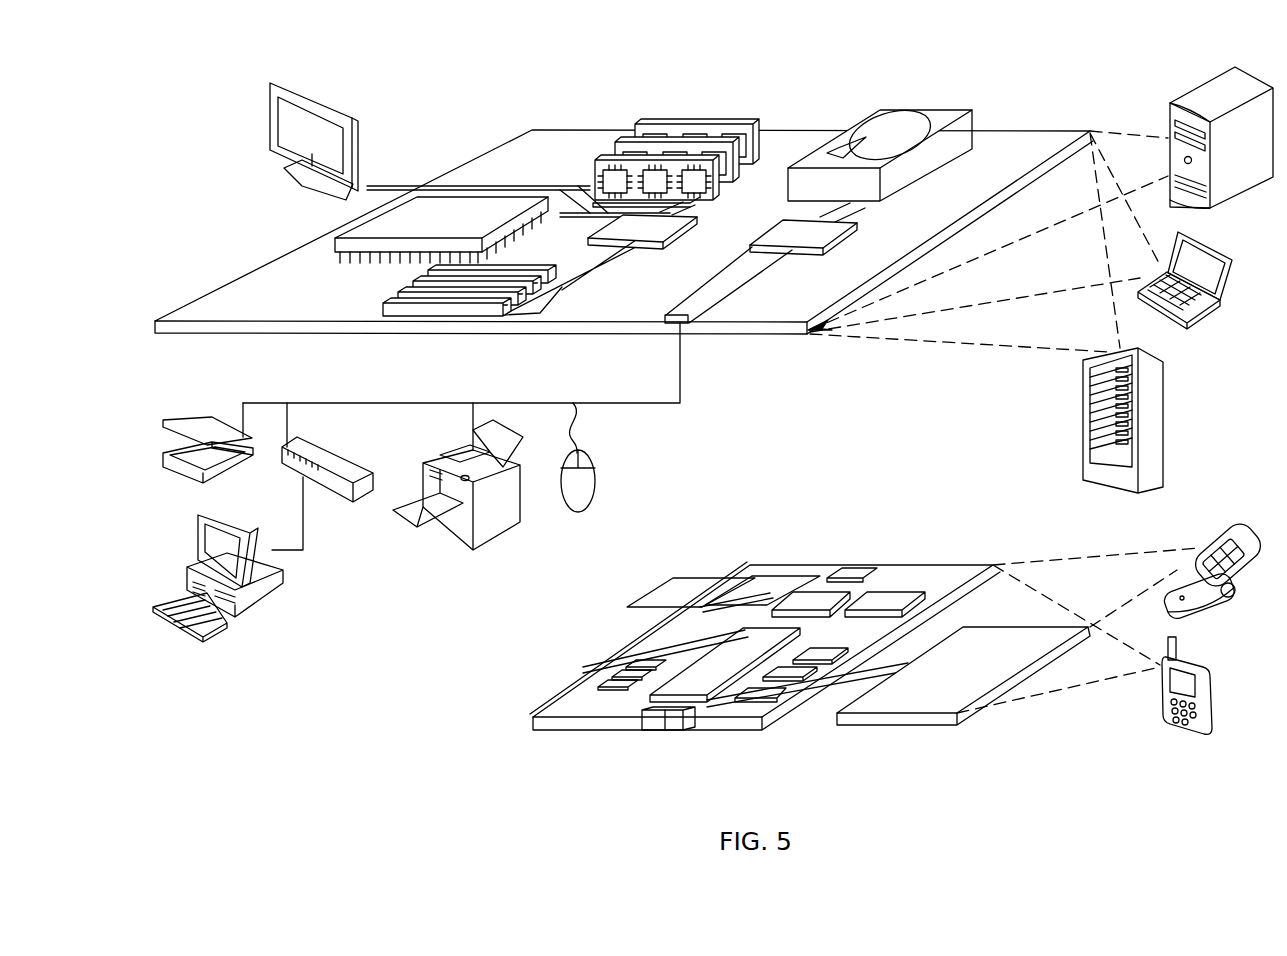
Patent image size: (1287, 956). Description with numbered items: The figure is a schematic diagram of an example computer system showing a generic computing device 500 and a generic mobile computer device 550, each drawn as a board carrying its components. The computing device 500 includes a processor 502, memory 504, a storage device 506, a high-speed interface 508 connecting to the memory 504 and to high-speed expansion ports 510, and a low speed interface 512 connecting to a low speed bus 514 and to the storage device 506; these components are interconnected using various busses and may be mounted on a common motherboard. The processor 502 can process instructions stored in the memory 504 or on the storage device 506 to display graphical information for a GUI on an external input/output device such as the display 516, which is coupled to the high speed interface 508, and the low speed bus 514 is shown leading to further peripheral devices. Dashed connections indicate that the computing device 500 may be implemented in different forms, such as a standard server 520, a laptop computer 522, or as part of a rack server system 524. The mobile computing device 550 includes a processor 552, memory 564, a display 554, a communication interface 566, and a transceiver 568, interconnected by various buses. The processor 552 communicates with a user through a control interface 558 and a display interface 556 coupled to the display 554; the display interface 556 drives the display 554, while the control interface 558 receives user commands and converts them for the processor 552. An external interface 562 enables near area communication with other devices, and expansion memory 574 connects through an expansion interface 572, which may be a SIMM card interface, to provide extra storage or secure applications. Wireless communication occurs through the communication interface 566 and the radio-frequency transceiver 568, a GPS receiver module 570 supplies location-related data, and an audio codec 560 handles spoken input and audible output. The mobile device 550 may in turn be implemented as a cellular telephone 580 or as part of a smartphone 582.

The computing device 500 is at (460, 99).
The processor 502 is at (335, 242).
The memory 504 is at (655, 124).
The storage device 506 is at (875, 110).
The high-speed interface 508 is at (620, 230).
The high-speed expansion ports 510 is at (400, 297).
The low speed interface 512 is at (786, 230).
The low speed bus 514 is at (688, 320).
The display 516 is at (270, 82).
The standard server 520 is at (1168, 117).
The laptop computer 522 is at (1232, 260).
The rack server system 524 is at (1082, 440).
The mobile computer device 550 is at (512, 727).
The processor 552 is at (700, 690).
The display 554 is at (923, 703).
The display interface 556 is at (765, 700).
The control interface 558 is at (793, 676).
The audio codec 560 is at (822, 656).
The external interface 562 is at (665, 722).
The memory 564 is at (625, 676).
The communication interface 566 is at (813, 600).
The transceiver 568 is at (886, 600).
The GPS receiver module 570 is at (862, 567).
The expansion interface 572 is at (742, 577).
The expansion memory 574 is at (669, 577).
The cellular telephone 580 is at (1218, 525).
The smartphone 582 is at (1160, 687).